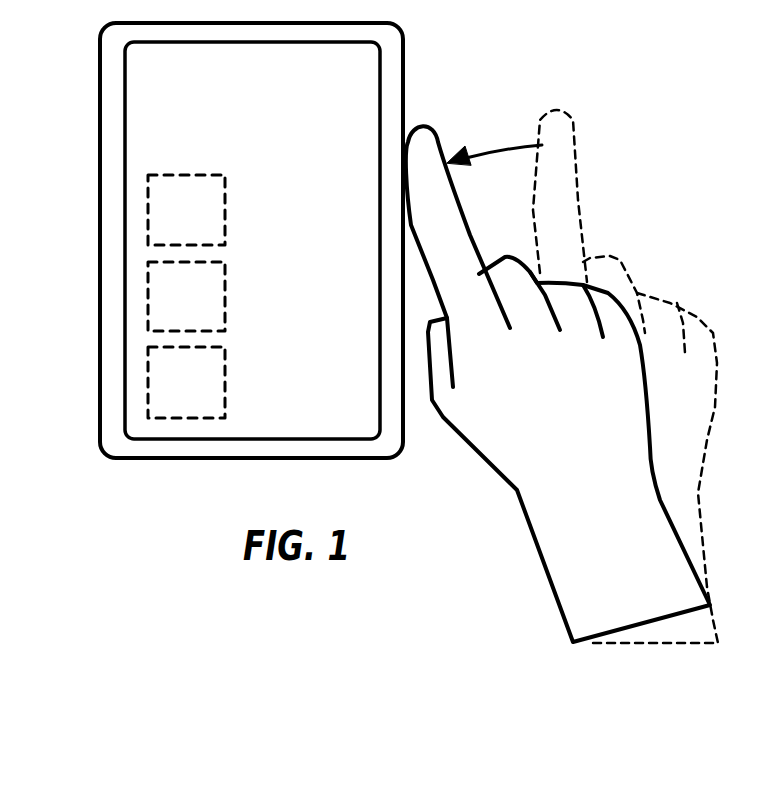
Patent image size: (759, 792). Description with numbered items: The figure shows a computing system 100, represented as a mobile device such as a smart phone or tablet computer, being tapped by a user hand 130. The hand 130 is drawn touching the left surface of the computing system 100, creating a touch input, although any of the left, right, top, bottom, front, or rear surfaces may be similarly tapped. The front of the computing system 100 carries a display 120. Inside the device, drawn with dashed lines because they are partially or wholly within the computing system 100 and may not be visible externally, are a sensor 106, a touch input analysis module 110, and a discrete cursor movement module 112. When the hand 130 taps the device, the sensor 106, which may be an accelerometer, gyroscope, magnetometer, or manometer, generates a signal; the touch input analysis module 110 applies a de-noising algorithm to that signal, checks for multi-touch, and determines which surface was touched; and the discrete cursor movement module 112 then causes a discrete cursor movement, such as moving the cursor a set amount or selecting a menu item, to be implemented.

The computing system 100 is at (148, 460).
The display 120 is at (124, 313).
The discrete cursor movement module 112 is at (227, 242).
The touch input analysis module 110 is at (227, 328).
The sensor 106 is at (227, 415).
The user hand 130 is at (615, 647).